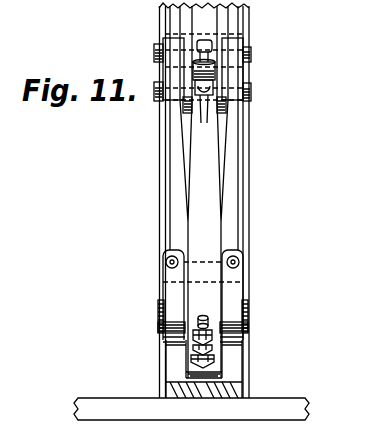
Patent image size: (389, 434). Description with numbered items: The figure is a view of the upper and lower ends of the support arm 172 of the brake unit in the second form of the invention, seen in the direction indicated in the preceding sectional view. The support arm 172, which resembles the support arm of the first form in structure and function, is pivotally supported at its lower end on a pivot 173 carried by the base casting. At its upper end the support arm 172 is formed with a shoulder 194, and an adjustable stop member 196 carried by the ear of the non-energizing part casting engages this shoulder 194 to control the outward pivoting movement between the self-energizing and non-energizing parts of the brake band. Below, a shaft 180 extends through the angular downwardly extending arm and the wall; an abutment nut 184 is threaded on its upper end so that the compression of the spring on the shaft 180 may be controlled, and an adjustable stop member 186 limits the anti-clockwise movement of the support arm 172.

The support arm 172 is at (235, 170).
The pivot 173 is at (246, 291).
The shaft 180 is at (70, 4).
The abutment nut 184 is at (210, 334).
The adjustable stop member 186 is at (215, 365).
The shoulder 194 is at (245, 88).
The adjustable stop member 196 is at (212, 47).